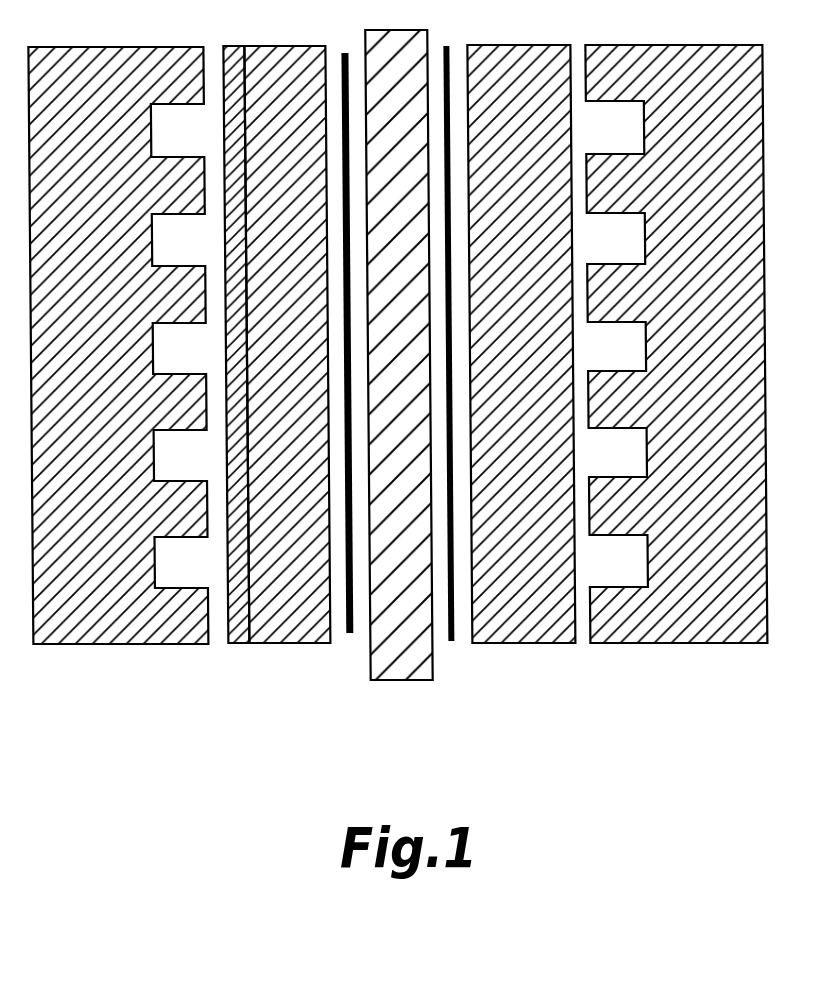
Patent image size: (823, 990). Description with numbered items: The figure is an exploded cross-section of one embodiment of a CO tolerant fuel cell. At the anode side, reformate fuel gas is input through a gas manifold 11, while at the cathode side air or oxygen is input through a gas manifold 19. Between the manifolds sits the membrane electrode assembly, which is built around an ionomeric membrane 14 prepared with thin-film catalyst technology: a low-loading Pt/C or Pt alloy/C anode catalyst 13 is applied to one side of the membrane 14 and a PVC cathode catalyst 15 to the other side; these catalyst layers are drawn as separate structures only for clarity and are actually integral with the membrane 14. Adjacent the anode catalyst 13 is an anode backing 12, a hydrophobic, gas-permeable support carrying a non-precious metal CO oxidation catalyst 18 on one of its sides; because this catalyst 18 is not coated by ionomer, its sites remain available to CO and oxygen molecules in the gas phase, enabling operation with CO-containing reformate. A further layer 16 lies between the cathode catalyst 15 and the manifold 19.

The gas manifold 11 is at (128, 638).
The CO oxidation catalyst 18 is at (233, 642).
The anode backing layer 12 is at (285, 638).
The anode catalyst layer 13 is at (347, 643).
The ionomeric membrane 14 is at (402, 655).
The cathode catalyst layer 15 is at (460, 650).
The third plate 16 is at (533, 632).
The gas manifold 19 is at (677, 633).